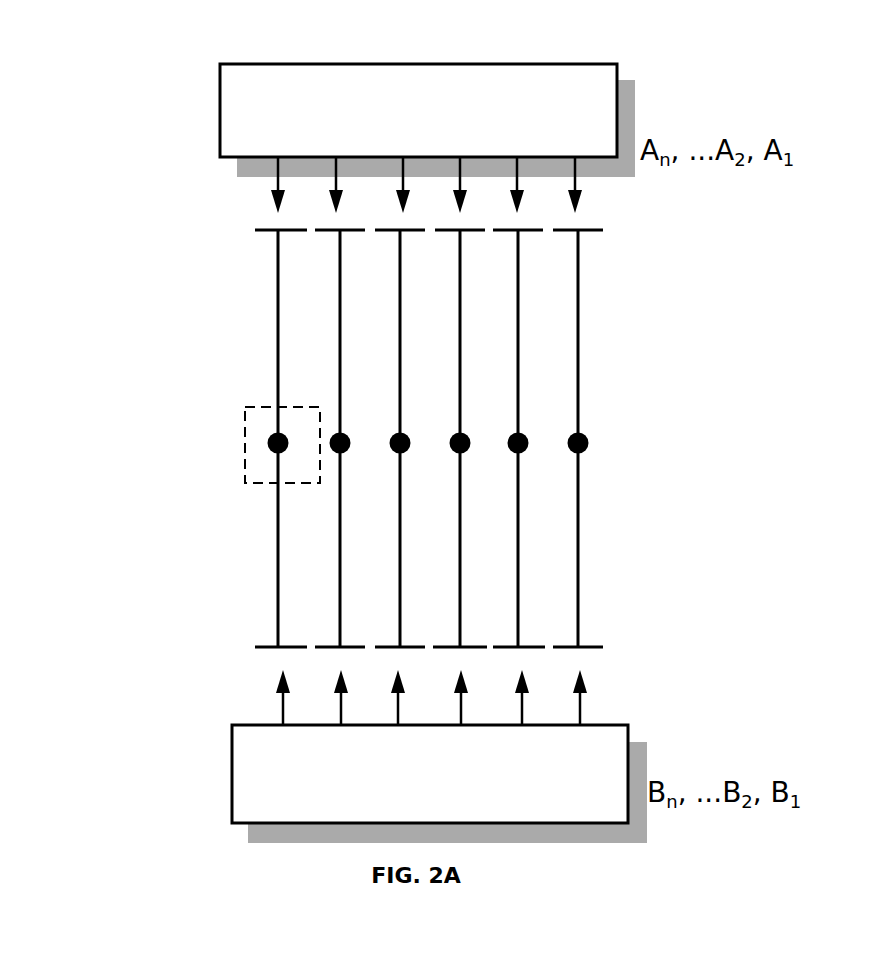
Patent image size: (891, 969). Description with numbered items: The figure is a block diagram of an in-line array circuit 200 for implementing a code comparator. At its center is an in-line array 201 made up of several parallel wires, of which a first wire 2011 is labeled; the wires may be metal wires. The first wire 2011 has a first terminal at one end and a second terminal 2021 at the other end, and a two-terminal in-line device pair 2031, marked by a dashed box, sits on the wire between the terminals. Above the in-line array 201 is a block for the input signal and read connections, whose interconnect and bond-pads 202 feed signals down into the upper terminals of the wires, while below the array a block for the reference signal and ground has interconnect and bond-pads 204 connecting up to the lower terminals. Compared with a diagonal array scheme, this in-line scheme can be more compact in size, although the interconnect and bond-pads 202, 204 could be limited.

The in-line array circuit 200 is at (422, 33).
The interconnect and bond-pads 202 is at (620, 105).
The in-line array 201 is at (630, 258).
The first wire 2011 is at (282, 302).
The second terminal 2021 is at (278, 635).
The two-terminal in-line device pair 2031 is at (278, 450).
The interconnect and bond-pads 204 is at (630, 737).